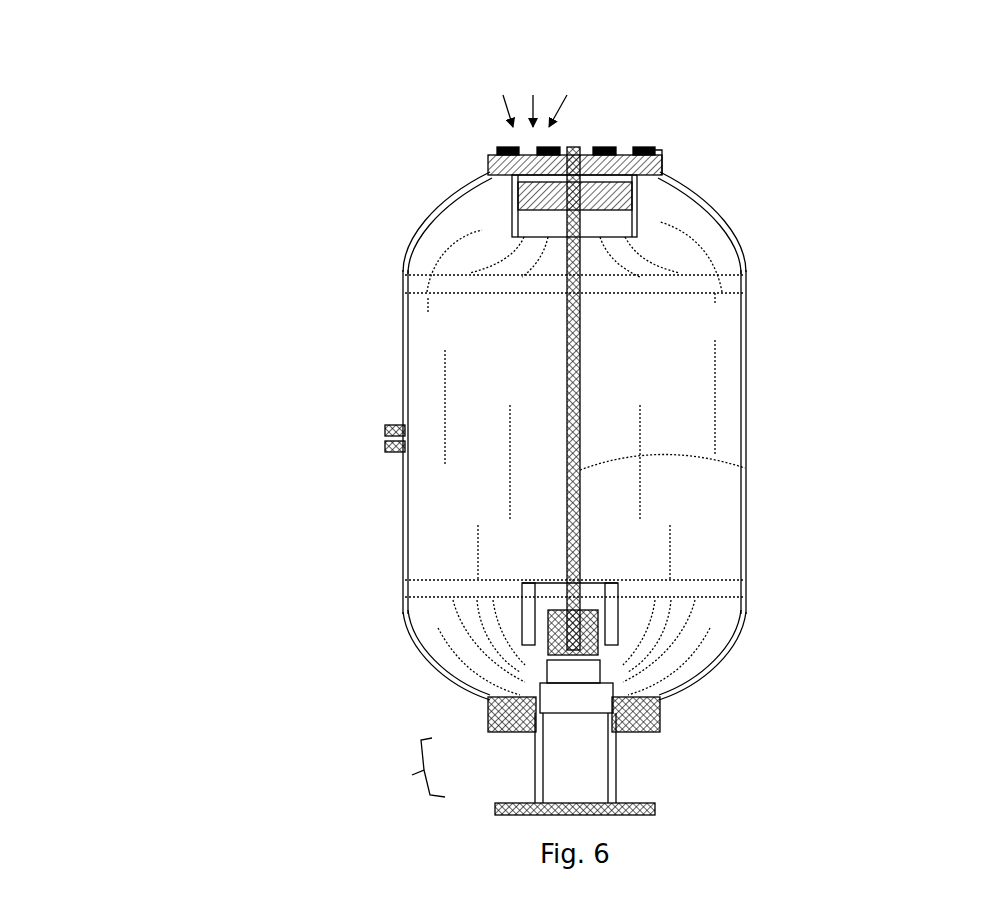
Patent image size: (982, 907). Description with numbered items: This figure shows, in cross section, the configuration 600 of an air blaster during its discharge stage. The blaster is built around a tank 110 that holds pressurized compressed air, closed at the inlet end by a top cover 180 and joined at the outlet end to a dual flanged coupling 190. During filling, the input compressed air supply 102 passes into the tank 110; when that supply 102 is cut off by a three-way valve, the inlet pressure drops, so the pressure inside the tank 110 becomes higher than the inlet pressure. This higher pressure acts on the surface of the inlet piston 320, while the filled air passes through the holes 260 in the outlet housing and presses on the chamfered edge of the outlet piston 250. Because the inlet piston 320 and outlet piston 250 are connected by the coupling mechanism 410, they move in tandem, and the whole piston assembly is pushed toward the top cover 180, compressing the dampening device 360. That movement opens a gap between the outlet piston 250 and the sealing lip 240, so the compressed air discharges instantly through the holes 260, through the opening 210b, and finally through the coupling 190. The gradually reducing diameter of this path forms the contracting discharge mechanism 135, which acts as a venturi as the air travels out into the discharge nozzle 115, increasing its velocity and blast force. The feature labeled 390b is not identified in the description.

The configuration of air blaster during discharge stage 600 is at (152, 214).
The input compressed air supply 102 is at (548, 77).
The upper distribution zone 390b is at (462, 160).
The top cover 180 is at (663, 150).
The dampening device 360 is at (688, 187).
The inlet piston 320 is at (660, 220).
The tank 110 is at (745, 385).
The coupling mechanism 410 is at (745, 468).
The outlet piston 250 is at (660, 690).
The sealing lip 240 is at (662, 722).
The holes 260 is at (492, 696).
The opening 210b is at (535, 716).
The coupling 190 is at (617, 778).
The contracting discharge mechanism 135 is at (405, 787).
The discharge nozzle 115 is at (530, 831).